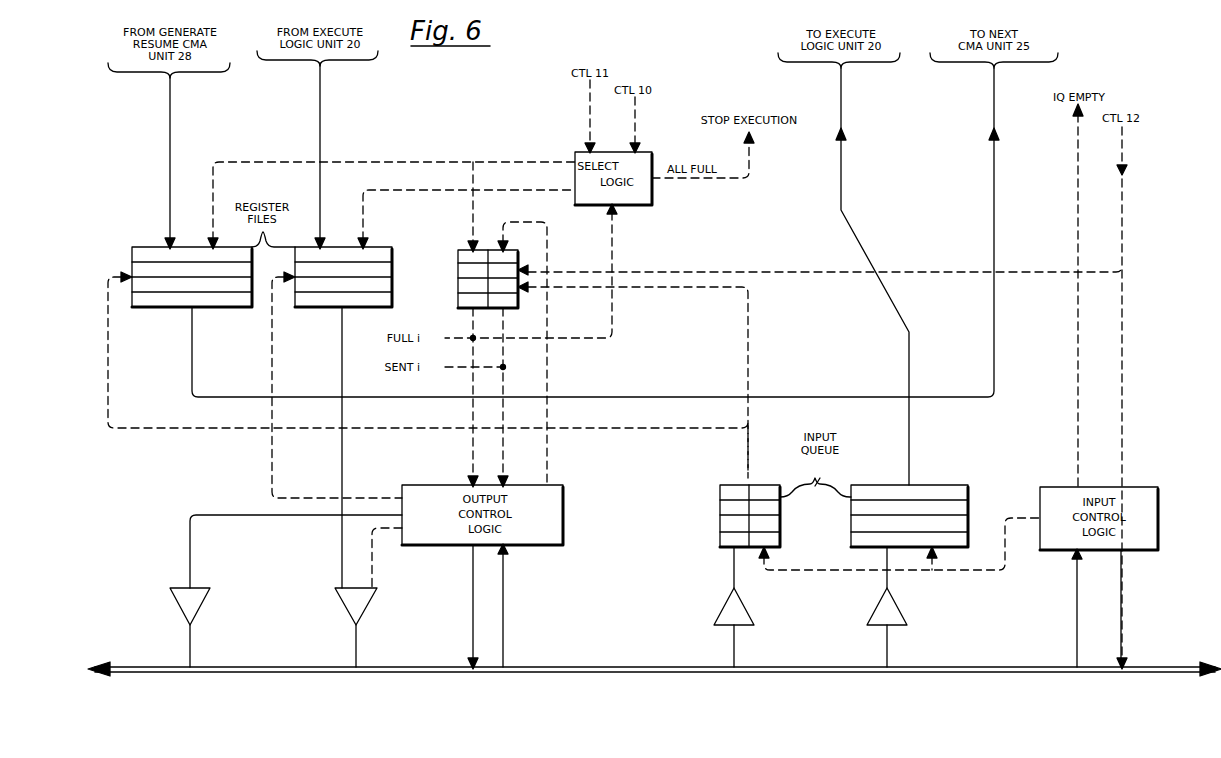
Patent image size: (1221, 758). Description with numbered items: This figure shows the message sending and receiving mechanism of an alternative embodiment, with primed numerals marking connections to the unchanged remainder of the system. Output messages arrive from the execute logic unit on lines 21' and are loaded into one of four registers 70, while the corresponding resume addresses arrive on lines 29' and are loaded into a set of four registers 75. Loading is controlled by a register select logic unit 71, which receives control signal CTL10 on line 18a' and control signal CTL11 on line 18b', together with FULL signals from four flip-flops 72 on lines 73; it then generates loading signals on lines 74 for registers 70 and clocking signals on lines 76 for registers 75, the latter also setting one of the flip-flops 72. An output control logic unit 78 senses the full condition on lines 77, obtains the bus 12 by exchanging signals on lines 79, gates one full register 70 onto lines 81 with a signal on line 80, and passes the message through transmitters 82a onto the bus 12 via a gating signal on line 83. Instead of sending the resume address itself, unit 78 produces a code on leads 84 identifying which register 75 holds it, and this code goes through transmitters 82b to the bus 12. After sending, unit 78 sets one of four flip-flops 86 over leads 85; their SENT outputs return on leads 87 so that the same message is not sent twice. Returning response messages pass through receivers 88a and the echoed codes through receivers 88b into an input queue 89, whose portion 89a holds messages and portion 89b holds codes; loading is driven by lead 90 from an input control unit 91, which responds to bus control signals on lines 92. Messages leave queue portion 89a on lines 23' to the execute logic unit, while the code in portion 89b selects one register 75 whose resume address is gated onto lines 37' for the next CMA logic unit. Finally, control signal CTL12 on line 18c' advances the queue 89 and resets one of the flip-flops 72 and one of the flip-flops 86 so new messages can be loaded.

The bus 12 is at (156, 664).
The line carrying control signal CTL10 18a' is at (654, 125).
The line carrying control signal CTL11 18b' is at (573, 116).
The line carrying control signal CTL12 18c' is at (1144, 398).
The lines 21' is at (304, 156).
The lines 23' is at (872, 276).
The lines 29' is at (156, 163).
The lines 37' is at (595, 232).
The registers 70 is at (392, 300).
The register select logic unit 71 is at (652, 200).
The flip-flops 72 is at (458, 293).
The lines 73 is at (612, 330).
The lines 74 is at (427, 190).
The registers 75 is at (132, 250).
The lines 76 is at (393, 160).
The lines 77 is at (468, 476).
The output control logic unit 78 is at (563, 520).
The lines 79 is at (473, 604).
The line 80 is at (270, 486).
The lines 81 is at (342, 485).
The transmitters 82a is at (346, 610).
The transmitters 82b is at (200, 610).
The line 83 is at (372, 555).
The leads 84 is at (190, 567).
The leads 85 is at (547, 476).
The flip-flops 86 is at (518, 262).
The leads 87 is at (504, 474).
The receivers 88a is at (900, 610).
The receivers 88b is at (720, 606).
The input queue 89 is at (820, 484).
The queue portion 89a is at (968, 490).
The queue portion 89b is at (720, 516).
The lead 90 is at (1005, 572).
The input control unit 91 is at (1158, 520).
The lines 92 is at (1077, 607).